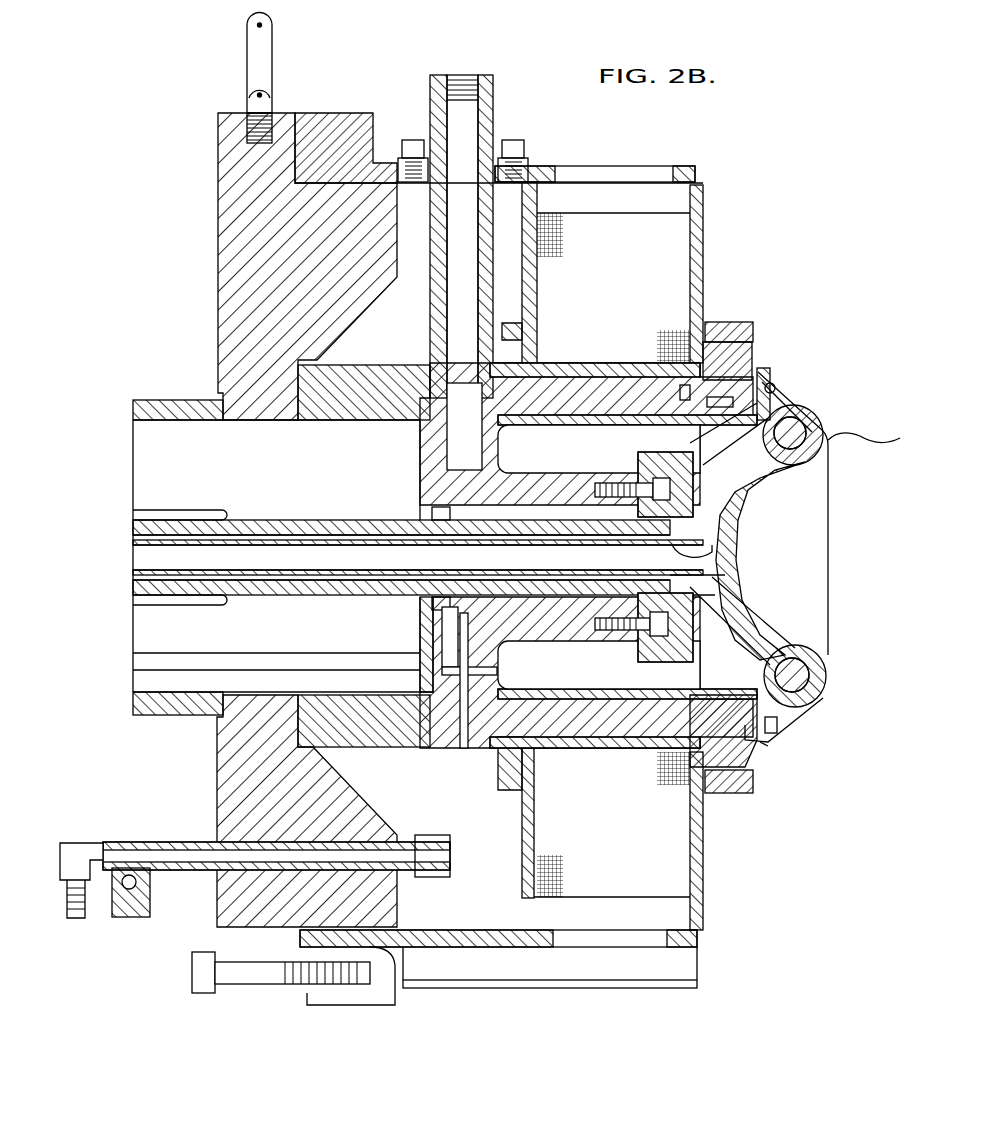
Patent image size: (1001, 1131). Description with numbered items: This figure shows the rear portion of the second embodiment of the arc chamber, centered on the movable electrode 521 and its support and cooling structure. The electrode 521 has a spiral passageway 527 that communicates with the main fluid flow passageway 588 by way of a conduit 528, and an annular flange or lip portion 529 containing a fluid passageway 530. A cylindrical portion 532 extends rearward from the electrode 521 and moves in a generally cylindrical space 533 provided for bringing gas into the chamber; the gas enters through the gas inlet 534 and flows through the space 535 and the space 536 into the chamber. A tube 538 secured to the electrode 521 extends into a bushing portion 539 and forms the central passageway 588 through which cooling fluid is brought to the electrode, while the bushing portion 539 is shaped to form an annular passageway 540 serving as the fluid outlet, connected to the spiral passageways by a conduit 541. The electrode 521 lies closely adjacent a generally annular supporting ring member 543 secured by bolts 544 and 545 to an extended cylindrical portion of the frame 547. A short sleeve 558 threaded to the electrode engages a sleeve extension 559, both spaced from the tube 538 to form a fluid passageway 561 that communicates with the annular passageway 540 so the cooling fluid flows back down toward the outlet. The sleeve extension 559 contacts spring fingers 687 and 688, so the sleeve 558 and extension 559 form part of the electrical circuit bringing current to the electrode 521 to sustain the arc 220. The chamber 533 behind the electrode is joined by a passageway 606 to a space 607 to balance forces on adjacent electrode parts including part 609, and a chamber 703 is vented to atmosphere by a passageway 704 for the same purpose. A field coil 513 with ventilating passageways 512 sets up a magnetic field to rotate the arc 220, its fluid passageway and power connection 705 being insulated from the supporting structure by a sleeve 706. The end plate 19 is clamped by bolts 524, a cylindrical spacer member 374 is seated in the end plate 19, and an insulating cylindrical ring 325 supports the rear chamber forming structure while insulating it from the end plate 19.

The end plate 19 is at (228, 243).
The arc 220 is at (852, 436).
The cylindrical ring of electrically insulating material 325 is at (376, 380).
The cylindrical spacer member 374 is at (162, 400).
The ventilating passageways 512 is at (593, 172).
The field coil 513 is at (632, 302).
The movable electrode 521 is at (828, 672).
The bolts 524 is at (252, 985).
The spiral passageway 527 is at (790, 466).
The conduit 528 is at (700, 497).
The annular flange portion 529 is at (767, 740).
The fluid passageway 530 is at (795, 728).
The cylindrical portion 532 is at (578, 427).
The cylindrical space 533 is at (512, 432).
The gas inlet 534 is at (484, 88).
The space 535 is at (627, 418).
The space 536 is at (775, 384).
The tube 538 is at (563, 544).
The bushing portion 539 is at (714, 554).
The annular passageway 540 is at (725, 575).
The conduit 541 is at (725, 647).
The annular supporting ring member 543 is at (668, 460).
The bolt 544 is at (612, 483).
The bolt 545 is at (615, 632).
The extended cylindrical portion of the frame 547 is at (487, 487).
The short sleeve 558 is at (502, 532).
The sleeve extension 559 is at (368, 523).
The fluid passageway 561 is at (578, 578).
The main fluid flow passageway 588 is at (364, 567).
The passageway 606 is at (428, 641).
The space 607 is at (440, 507).
The part 609 is at (432, 608).
The spring finger 687 is at (208, 516).
The spring finger 688 is at (192, 601).
The chamber 703 is at (550, 600).
The passageway 704 is at (462, 748).
The fluid passageway and power connection 705 is at (163, 842).
The sleeve 706 is at (197, 843).